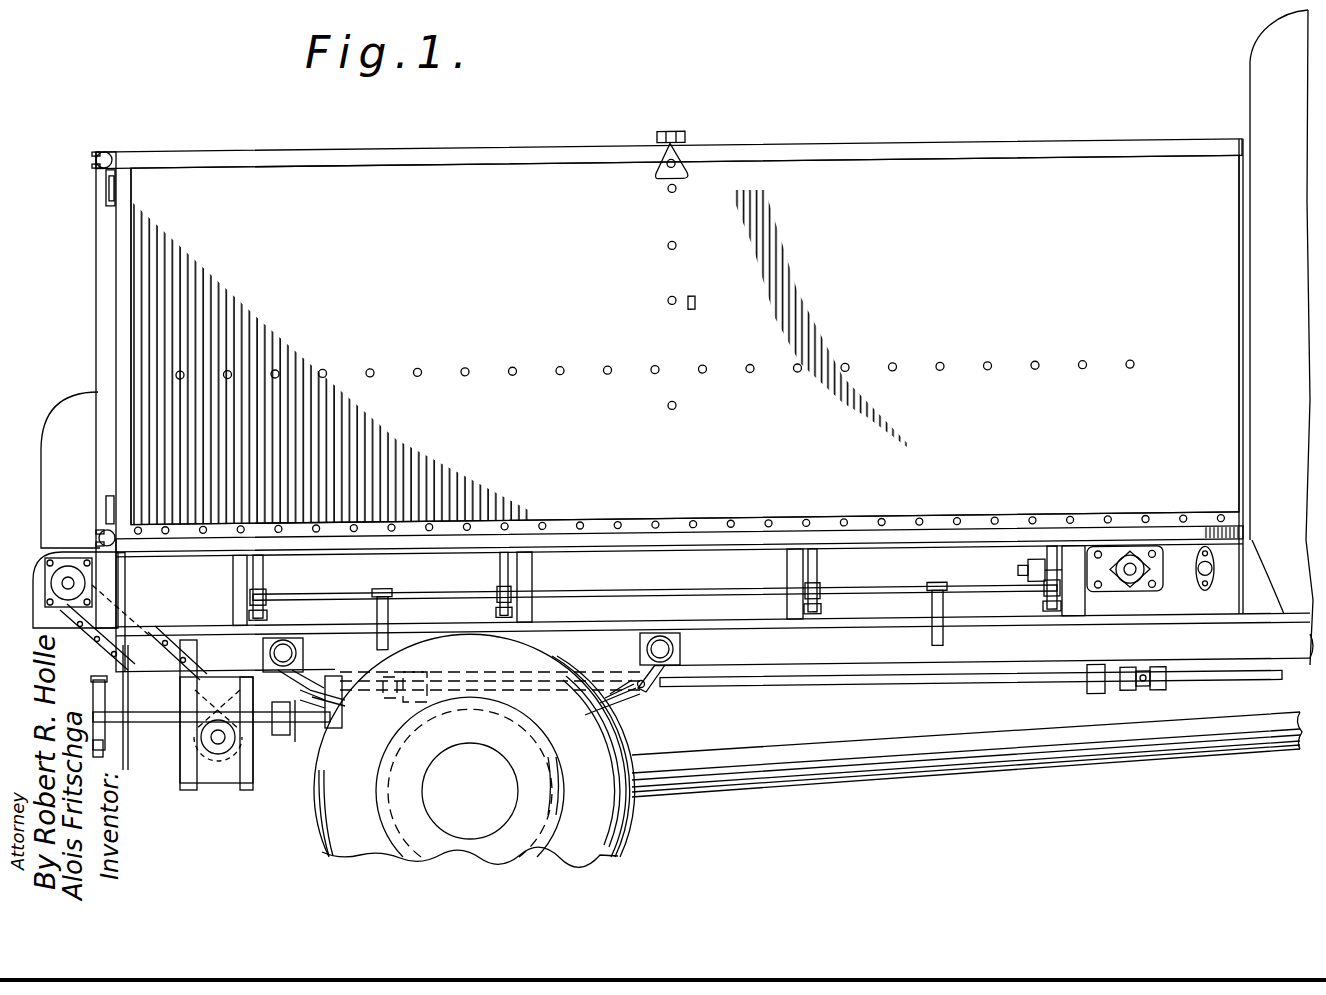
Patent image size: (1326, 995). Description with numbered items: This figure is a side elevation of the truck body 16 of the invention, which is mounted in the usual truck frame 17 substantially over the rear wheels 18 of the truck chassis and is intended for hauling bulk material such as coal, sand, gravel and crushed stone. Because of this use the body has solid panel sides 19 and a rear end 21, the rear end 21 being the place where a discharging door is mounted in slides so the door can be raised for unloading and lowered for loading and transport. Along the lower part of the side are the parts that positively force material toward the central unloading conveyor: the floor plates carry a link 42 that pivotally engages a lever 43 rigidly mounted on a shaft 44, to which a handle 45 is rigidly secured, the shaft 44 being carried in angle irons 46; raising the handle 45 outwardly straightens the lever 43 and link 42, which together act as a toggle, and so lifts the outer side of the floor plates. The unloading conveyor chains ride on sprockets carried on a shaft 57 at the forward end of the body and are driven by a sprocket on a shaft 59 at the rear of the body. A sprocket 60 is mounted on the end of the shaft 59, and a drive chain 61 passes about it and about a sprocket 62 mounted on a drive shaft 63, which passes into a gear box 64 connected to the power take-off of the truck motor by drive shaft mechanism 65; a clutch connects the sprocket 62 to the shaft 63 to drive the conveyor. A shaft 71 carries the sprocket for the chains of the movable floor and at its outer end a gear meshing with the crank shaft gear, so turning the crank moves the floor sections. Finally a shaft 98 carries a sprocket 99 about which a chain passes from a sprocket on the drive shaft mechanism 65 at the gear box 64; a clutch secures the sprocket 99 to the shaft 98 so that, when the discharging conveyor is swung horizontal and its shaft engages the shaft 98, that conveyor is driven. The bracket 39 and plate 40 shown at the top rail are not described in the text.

The truck body 16 is at (890, 154).
The truck frame 17 is at (830, 658).
The rear wheels 18 is at (620, 731).
The solid panel sides 19 is at (578, 252).
The rear end 21 is at (96, 246).
The bracket 39 is at (675, 140).
The latch plate 40 is at (683, 183).
The link 42 is at (265, 572).
The lever 43 is at (268, 608).
The shaft 44 is at (355, 601).
The handle 45 is at (377, 648).
The angle irons 46 is at (247, 582).
The shaft 57 is at (1157, 592).
The shaft 59 is at (70, 578).
The sprocket 60 is at (78, 615).
The drive chain 61 is at (165, 634).
The sprocket 62 is at (246, 672).
The drive shaft 63 is at (218, 742).
The gear box 64 is at (238, 784).
The drive shaft mechanism 65 is at (885, 694).
The shaft 71 is at (1223, 583).
The shaft 98 is at (150, 723).
The sprocket 99 is at (266, 736).